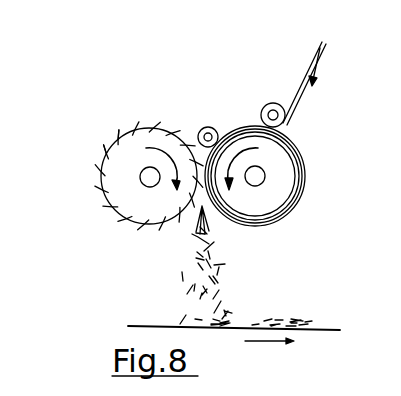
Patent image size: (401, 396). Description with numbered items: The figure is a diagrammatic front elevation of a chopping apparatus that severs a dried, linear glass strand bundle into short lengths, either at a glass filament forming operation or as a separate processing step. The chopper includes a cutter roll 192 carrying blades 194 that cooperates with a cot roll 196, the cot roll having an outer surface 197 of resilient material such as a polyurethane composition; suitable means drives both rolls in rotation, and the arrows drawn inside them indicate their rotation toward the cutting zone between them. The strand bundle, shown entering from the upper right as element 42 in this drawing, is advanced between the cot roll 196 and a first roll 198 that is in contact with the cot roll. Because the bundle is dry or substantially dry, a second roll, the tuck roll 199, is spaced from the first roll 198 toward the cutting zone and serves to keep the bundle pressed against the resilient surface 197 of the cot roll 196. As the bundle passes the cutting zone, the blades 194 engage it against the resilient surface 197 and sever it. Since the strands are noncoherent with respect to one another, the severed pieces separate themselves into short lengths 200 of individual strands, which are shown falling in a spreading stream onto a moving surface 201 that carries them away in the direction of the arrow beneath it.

The web 42 is at (312, 50).
The cutter roll 192 is at (137, 131).
The blades 194 is at (105, 148).
The cot roll 196 is at (284, 140).
The outer surface 197 is at (286, 148).
The first roll 198 is at (292, 70).
The tuck roll 199 is at (220, 102).
The short lengths 200 is at (216, 272).
The moving surface 201 is at (348, 287).